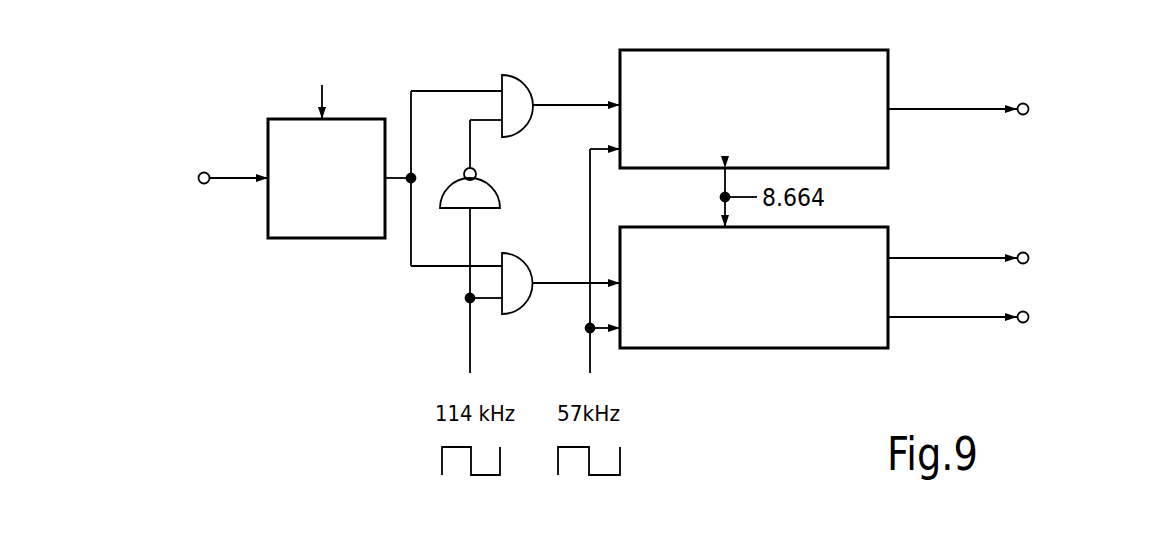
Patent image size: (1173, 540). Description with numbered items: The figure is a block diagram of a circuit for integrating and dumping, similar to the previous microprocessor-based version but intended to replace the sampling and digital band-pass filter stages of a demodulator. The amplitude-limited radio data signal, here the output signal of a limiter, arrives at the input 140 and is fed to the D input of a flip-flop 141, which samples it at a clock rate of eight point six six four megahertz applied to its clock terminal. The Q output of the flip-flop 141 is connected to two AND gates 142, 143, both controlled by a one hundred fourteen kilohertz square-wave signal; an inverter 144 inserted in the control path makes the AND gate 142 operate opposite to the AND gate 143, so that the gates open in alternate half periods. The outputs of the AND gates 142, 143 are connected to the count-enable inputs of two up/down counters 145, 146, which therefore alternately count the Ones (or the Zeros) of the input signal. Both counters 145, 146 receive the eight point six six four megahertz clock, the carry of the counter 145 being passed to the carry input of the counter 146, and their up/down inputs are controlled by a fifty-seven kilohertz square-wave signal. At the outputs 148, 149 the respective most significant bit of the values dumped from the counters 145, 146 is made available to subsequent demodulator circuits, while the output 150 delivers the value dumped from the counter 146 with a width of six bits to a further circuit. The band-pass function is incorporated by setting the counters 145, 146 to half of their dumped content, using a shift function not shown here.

The input 140 is at (211, 174).
The flip-flop 141 is at (285, 131).
The AND gate 142 is at (515, 88).
The AND gate 143 is at (515, 262).
The inverter 144 is at (485, 195).
The up/down counter 145 is at (848, 63).
The up/down counter 146 is at (866, 242).
The output 148 is at (1023, 103).
The output 149 is at (1019, 252).
The output 150 is at (1023, 323).